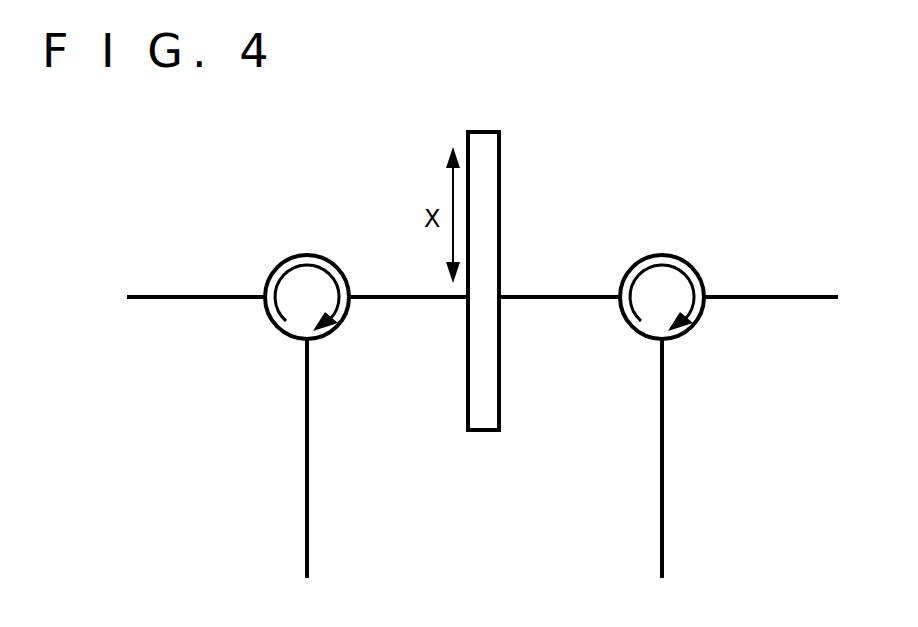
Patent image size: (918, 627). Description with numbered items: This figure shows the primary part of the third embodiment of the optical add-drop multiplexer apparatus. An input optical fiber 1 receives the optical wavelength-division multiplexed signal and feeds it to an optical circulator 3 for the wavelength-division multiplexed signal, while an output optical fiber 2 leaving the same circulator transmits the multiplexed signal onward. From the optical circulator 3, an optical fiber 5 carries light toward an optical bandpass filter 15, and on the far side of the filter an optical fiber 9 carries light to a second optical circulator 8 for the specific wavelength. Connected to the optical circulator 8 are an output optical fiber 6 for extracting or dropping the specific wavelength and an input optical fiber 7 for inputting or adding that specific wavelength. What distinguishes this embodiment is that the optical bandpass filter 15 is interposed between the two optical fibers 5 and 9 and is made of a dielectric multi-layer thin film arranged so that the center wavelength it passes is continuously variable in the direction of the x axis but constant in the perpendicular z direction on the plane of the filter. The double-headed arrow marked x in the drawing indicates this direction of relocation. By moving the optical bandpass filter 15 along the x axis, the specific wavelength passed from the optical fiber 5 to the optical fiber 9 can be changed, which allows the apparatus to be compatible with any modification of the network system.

The input optical fiber 1 is at (205, 298).
The output optical fiber 2 is at (308, 545).
The optical circulator 3 is at (320, 340).
The optical fiber 5 is at (402, 298).
The output optical fiber 6 is at (804, 298).
The input optical fiber 7 is at (663, 537).
The optical circulator 8 is at (680, 334).
The optical fiber 9 is at (553, 298).
The optical bandpass filter 15 is at (481, 431).